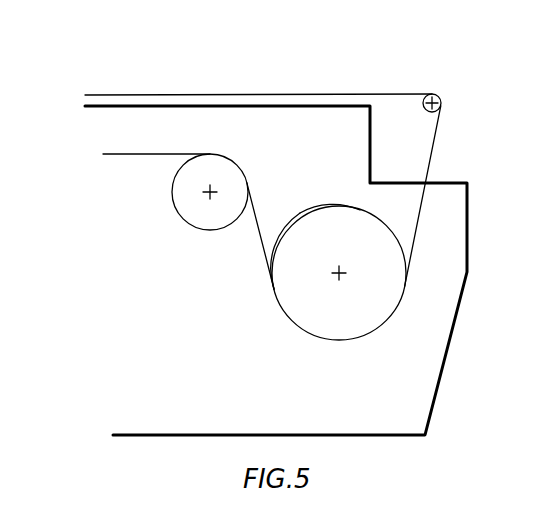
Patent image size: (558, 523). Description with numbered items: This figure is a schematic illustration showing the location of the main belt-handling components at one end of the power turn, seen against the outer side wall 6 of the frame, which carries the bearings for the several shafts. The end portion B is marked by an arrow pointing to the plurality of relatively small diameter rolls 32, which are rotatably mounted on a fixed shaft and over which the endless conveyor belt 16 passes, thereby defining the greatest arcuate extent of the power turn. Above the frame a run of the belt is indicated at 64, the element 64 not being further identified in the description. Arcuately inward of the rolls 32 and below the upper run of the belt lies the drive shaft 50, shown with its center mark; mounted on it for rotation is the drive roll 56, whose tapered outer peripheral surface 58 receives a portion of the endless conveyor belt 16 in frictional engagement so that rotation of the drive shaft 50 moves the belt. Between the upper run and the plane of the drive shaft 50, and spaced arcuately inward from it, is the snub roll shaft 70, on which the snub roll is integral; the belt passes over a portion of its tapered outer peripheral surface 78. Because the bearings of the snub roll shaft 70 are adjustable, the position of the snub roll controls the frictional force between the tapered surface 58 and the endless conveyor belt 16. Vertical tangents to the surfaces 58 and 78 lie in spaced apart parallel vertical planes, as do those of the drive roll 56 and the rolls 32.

The outer side wall 6 is at (212, 374).
The cable 64 is at (233, 96).
The relatively small diameter rolls 32 is at (427, 110).
The endless conveyor belt 16 is at (429, 165).
The tapered outer peripheral surface 78 is at (180, 199).
The snub roll shaft 70 is at (213, 195).
The drive shaft 50 is at (340, 273).
The drive roll 56 is at (290, 225).
The tapered outer peripheral surface 58 is at (318, 209).
The end portion B is at (493, 56).